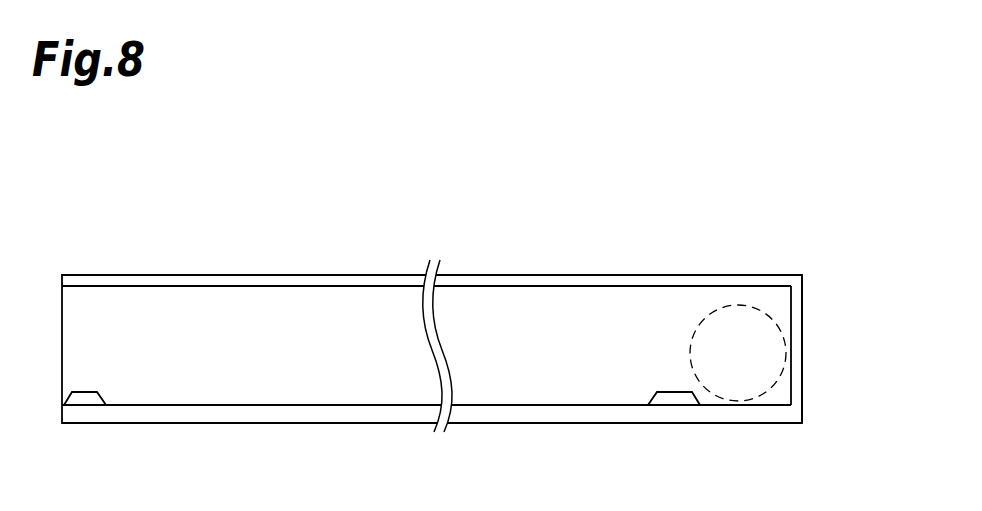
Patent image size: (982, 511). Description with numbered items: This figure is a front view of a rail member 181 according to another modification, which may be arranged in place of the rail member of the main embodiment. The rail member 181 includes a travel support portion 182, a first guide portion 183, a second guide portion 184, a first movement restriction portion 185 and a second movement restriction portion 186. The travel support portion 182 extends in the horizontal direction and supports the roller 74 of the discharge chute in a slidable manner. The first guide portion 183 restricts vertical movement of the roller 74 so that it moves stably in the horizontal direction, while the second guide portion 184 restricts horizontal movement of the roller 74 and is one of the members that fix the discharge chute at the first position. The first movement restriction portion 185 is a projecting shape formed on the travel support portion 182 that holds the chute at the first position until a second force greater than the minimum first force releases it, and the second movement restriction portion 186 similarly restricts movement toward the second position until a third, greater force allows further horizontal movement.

The rail member 181 is at (283, 276).
The travel support portion 182 is at (297, 405).
The first guide portion 183 is at (545, 287).
The second guide portion 184 is at (793, 309).
The first movement restriction portion 185 is at (680, 390).
The second movement restriction portion 186 is at (83, 390).
The roller 74 is at (767, 357).